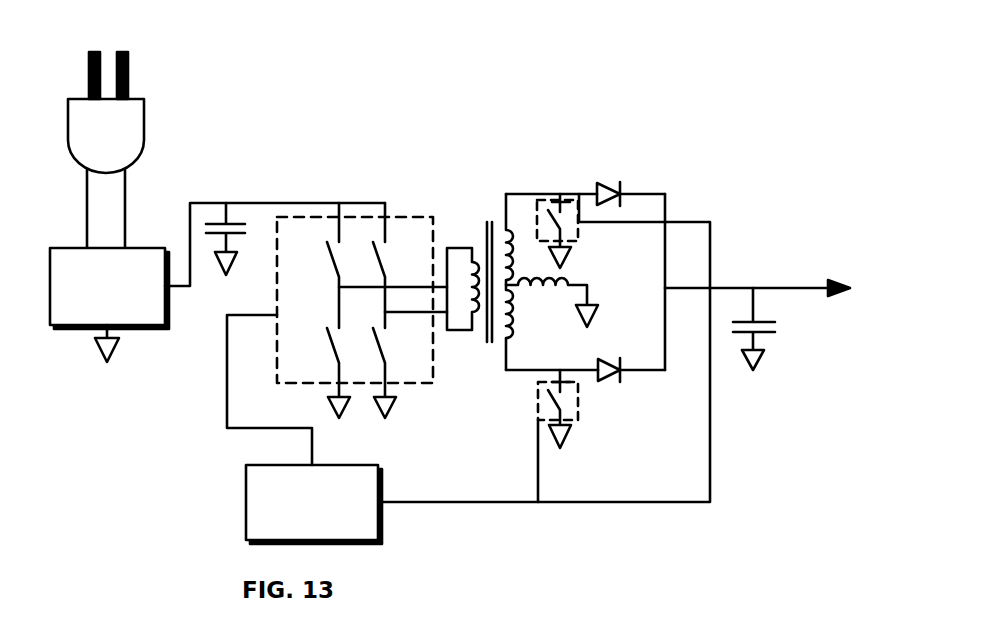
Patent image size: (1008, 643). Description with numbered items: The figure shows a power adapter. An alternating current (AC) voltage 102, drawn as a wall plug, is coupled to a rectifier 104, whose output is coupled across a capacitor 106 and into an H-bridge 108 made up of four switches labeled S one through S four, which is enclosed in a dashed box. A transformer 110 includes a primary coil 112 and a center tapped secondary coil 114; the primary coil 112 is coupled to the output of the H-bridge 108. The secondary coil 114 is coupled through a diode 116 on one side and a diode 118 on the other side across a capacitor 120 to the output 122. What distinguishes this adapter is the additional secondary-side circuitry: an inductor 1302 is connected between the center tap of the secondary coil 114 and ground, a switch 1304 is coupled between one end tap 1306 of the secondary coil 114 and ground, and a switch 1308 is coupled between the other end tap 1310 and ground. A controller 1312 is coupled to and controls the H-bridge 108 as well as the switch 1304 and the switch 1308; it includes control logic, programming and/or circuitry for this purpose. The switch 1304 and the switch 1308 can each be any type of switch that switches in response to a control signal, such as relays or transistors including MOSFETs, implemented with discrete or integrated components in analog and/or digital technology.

The alternating current (AC) voltage 102 is at (153, 88).
The rectifier 104 is at (109, 305).
The capacitor 106 is at (211, 222).
The H-bridge 108 is at (422, 388).
The transformer 110 is at (482, 222).
The primary coil 112 is at (465, 240).
The center tapped secondary coil 114 is at (492, 212).
The diode 116 is at (625, 177).
The diode 118 is at (613, 380).
The capacitor 120 is at (782, 342).
The output 122 is at (832, 267).
The inductor 1302 is at (530, 302).
The switch 1304 is at (580, 197).
The end tap 1306 is at (504, 190).
The switch 1308 is at (577, 422).
The end tap 1310 is at (500, 385).
The controller 1312 is at (304, 429).